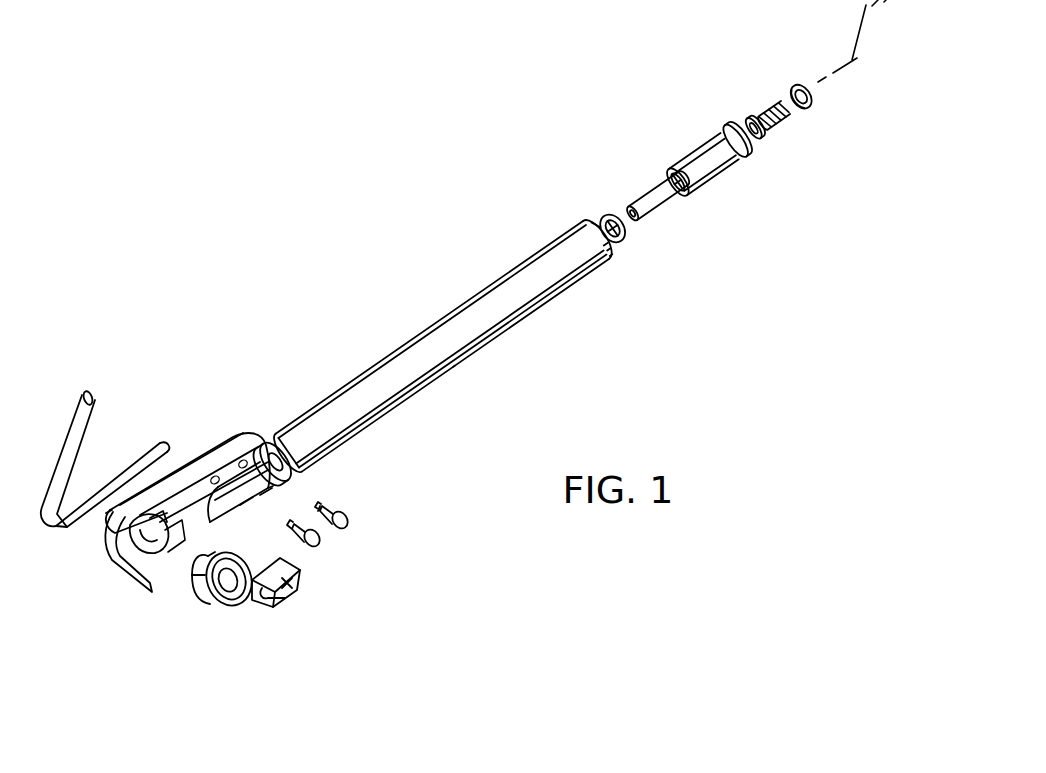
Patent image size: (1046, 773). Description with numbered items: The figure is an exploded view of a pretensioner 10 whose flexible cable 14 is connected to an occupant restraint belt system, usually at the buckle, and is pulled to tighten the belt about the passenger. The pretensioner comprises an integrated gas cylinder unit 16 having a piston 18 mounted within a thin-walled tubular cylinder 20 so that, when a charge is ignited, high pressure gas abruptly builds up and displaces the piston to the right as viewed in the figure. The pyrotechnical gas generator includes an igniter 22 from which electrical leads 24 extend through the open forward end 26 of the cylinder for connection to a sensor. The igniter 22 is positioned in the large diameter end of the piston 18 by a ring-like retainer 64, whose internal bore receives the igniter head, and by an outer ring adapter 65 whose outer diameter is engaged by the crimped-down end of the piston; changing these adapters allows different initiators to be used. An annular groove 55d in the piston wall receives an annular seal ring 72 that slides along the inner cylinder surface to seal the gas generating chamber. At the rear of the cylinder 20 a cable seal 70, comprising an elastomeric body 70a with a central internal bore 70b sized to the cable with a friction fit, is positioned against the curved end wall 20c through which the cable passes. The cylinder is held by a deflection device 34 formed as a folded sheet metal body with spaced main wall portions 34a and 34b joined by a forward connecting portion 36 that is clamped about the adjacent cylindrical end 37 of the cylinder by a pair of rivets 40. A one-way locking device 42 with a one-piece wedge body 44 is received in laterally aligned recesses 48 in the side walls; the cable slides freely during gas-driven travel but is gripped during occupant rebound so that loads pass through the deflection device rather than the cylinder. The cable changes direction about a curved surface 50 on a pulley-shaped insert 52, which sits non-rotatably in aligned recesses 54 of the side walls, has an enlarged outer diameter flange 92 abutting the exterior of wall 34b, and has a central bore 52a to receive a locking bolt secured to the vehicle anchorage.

The pretensioner 10 is at (465, 268).
The cable 14 is at (100, 490).
The integrated gas cylinder unit 16 is at (431, 389).
The piston 18 is at (672, 218).
The cylinder 20 is at (356, 364).
The curved end wall 20c is at (277, 439).
The igniter 22 is at (781, 134).
The electrical leads 24 is at (786, 106).
The open forward end 26 is at (597, 222).
The deflection device 34 is at (240, 423).
The main wall portion 34a is at (181, 468).
The main wall portion 34b is at (106, 513).
The forward connecting portion 36 is at (253, 497).
The cylindrical end 37 is at (306, 456).
The rivets 40 is at (351, 515).
The one-way locking device 42 is at (205, 428).
The one-piece wedge body 44 is at (293, 597).
The recesses 48 is at (167, 548).
The curved surface 50 is at (193, 601).
The pulley-shaped insert 52 is at (374, 10).
The central bore 52a is at (220, 588).
The recesses 54 is at (133, 553).
The groove 55d is at (667, 166).
The ring-like retainer 64 is at (760, 141).
The ring adapter 65 is at (812, 100).
The cable seal 70 is at (603, 203).
The body 70a is at (624, 236).
The internal bore 70b is at (600, 262).
The annular seal ring 72 is at (727, 126).
The enlarged outer diameter flange 92 is at (469, 10).